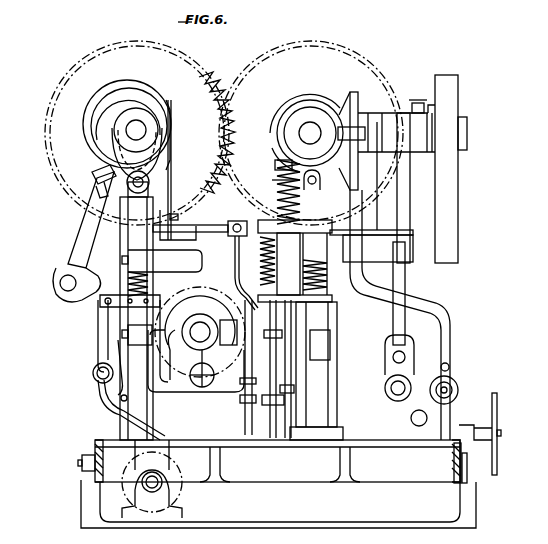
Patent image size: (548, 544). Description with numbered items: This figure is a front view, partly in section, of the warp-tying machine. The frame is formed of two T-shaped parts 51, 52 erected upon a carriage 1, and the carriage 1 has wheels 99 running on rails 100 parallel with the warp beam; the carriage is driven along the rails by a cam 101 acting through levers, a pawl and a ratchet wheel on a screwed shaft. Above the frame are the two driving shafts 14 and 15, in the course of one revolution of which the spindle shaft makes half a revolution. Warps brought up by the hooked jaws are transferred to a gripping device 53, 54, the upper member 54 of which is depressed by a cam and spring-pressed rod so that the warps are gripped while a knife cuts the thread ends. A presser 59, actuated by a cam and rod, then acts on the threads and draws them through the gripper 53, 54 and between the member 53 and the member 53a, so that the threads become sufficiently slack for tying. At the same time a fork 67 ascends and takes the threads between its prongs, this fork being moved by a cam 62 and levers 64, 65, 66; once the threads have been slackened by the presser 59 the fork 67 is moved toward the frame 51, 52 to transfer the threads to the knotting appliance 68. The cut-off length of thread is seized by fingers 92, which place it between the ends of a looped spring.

The carriage 1 is at (380, 477).
The driving shaft 14 is at (136, 130).
The driving shaft 15 is at (317, 159).
The T-shaped frame part 51 is at (326, 420).
The T-shaped frame part 52 is at (130, 410).
The gripping device member 53 is at (278, 369).
The gripping device member 53a is at (260, 440).
The upper member of gripping device 54 is at (262, 300).
The presser 59 is at (268, 364).
The cam 62 is at (130, 146).
The lever 64 is at (172, 178).
The lever 65 is at (176, 233).
The lever 66 is at (168, 258).
The fork 67 is at (214, 406).
The knotting appliance 68 is at (194, 384).
The fingers 92 is at (246, 386).
The wheels 99 is at (84, 462).
The rails 100 is at (86, 502).
The cam 101 is at (118, 86).